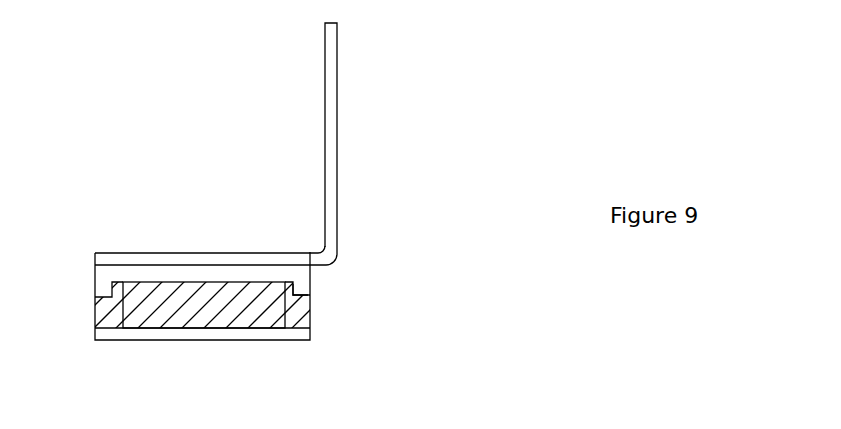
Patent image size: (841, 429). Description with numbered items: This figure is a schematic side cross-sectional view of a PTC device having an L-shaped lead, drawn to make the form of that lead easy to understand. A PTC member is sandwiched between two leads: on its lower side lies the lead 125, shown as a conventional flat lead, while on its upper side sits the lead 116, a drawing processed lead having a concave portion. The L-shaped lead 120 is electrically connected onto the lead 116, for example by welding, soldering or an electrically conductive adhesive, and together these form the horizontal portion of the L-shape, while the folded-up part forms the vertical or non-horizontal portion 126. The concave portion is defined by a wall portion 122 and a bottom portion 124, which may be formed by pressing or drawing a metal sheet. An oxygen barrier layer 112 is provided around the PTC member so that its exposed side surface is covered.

The oxygen barrier layer 112 is at (103, 312).
The lead having a concave portion 116 is at (142, 273).
The L-shaped lead 120 is at (202, 258).
The wall portion 122 is at (302, 290).
The bottom portion 124 is at (293, 272).
The lead 125 is at (213, 333).
The vertical portion 126 is at (337, 124).